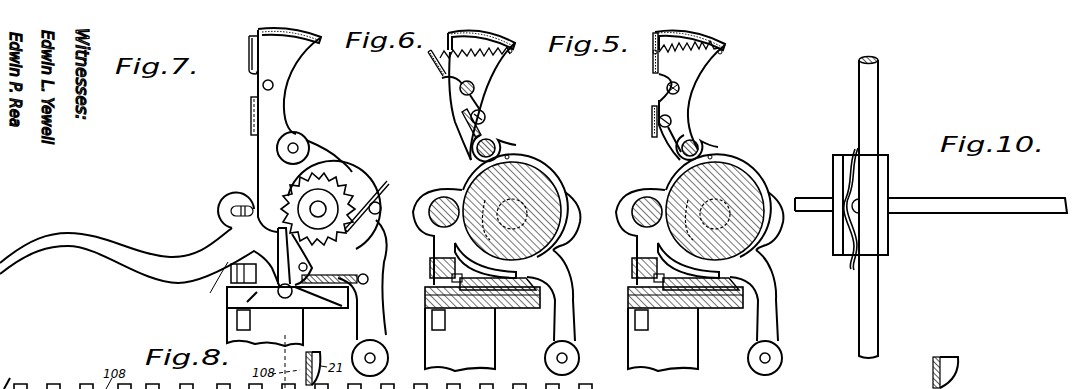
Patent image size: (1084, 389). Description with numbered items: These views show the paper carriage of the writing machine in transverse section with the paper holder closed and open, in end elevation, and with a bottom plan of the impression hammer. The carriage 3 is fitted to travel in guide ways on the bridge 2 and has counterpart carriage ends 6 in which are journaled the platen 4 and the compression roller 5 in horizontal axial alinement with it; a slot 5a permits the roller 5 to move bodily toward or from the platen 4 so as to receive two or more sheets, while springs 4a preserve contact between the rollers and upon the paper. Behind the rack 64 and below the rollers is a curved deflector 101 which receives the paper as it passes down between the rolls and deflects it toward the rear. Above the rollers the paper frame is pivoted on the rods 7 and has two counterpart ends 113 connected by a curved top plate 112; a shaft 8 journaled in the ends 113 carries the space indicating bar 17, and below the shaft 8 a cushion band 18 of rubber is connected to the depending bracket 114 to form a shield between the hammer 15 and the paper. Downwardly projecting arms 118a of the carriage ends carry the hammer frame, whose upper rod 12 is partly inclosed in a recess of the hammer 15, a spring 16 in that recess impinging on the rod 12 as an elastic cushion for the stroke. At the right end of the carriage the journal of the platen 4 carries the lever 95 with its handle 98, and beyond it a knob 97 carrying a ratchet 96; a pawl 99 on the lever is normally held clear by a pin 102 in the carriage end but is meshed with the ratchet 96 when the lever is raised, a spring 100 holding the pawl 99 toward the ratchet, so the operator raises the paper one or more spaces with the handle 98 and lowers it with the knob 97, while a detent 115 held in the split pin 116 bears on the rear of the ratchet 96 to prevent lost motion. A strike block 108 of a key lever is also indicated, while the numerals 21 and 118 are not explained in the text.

In FIG. 7, the bridge 2 is at (229, 298).
In FIG. 6, the bridge 2 is at (455, 318).
In FIG. 5, the bridge 2 is at (652, 312).
In FIG. 7, the carriage 3 is at (261, 297).
In FIG. 6, the carriage 3 is at (430, 298).
In FIG. 5, the carriage 3 is at (636, 298).
In FIG. 6, the platen 4 is at (474, 180).
In FIG. 5, the platen 4 is at (690, 183).
In FIG. 6, the springs 4a is at (550, 257).
In FIG. 5, the springs 4a is at (762, 249).
In FIG. 7, the compression roller 5 is at (244, 205).
In FIG. 6, the compression roller 5 is at (434, 226).
In FIG. 5, the compression roller 5 is at (636, 200).
In FIG. 7, the slot 5a is at (236, 211).
In FIG. 7, the carriage ends 6 is at (352, 176).
In FIG. 6, the carriage ends 6 is at (535, 167).
In FIG. 5, the carriage ends 6 is at (747, 178).
In FIG. 6, the rods 7 is at (500, 143).
In FIG. 5, the rods 7 is at (703, 148).
In FIG. 7, the shaft 8 is at (262, 86).
In FIG. 6, the shaft 8 is at (476, 92).
In FIG. 5, the shaft 8 is at (666, 88).
In FIG. 10, the rod 12 is at (867, 231).
In FIG. 10, the hammer 15 is at (897, 203).
In FIG. 10, the spring 16 is at (860, 172).
In FIG. 7, the space indicating bar 17 is at (250, 56).
In FIG. 6, the space indicating bar 17 is at (436, 64).
In FIG. 5, the space indicating bar 17 is at (652, 60).
In FIG. 7, the cushion band 18 is at (251, 126).
In FIG. 6, the cushion band 18 is at (461, 121).
In FIG. 5, the cushion band 18 is at (651, 125).
In FIG. 10, the strip 21 is at (932, 374).
In FIG. 7, the rack 64 is at (247, 272).
In FIG. 6, the rack 64 is at (431, 270).
In FIG. 5, the rack 64 is at (634, 268).
In FIG. 7, the lever 95 is at (246, 165).
In FIG. 7, the ratchet 96 is at (346, 190).
In FIG. 7, the knob 97 is at (330, 195).
In FIG. 7, the handle 98 is at (15, 255).
In FIG. 7, the pawl 99 is at (280, 248).
In FIG. 7, the spring 100 is at (323, 276).
In FIG. 6, the curved deflector 101 is at (490, 290).
In FIG. 5, the curved deflector 101 is at (688, 290).
In FIG. 7, the pin 102 is at (308, 268).
In FIG. 10, the strike block 108 is at (962, 365).
In FIG. 7, the curved top plate 112 is at (297, 35).
In FIG. 6, the curved top plate 112 is at (493, 38).
In FIG. 5, the curved top plate 112 is at (706, 40).
In FIG. 7, the paper frame ends 113 is at (286, 62).
In FIG. 6, the paper frame ends 113 is at (487, 66).
In FIG. 5, the paper frame ends 113 is at (695, 65).
In FIG. 6, the depending bracket 114 is at (488, 117).
In FIG. 5, the depending bracket 114 is at (672, 122).
In FIG. 7, the detent 115 is at (366, 222).
In FIG. 7, the split pin 116 is at (381, 210).
In FIG. 7, the arm 118 is at (380, 327).
In FIG. 6, the arm 118 is at (572, 321).
In FIG. 5, the arm 118 is at (777, 321).
In FIG. 6, the downwardly projecting arms 118a is at (425, 310).
In FIG. 5, the downwardly projecting arms 118a is at (628, 318).